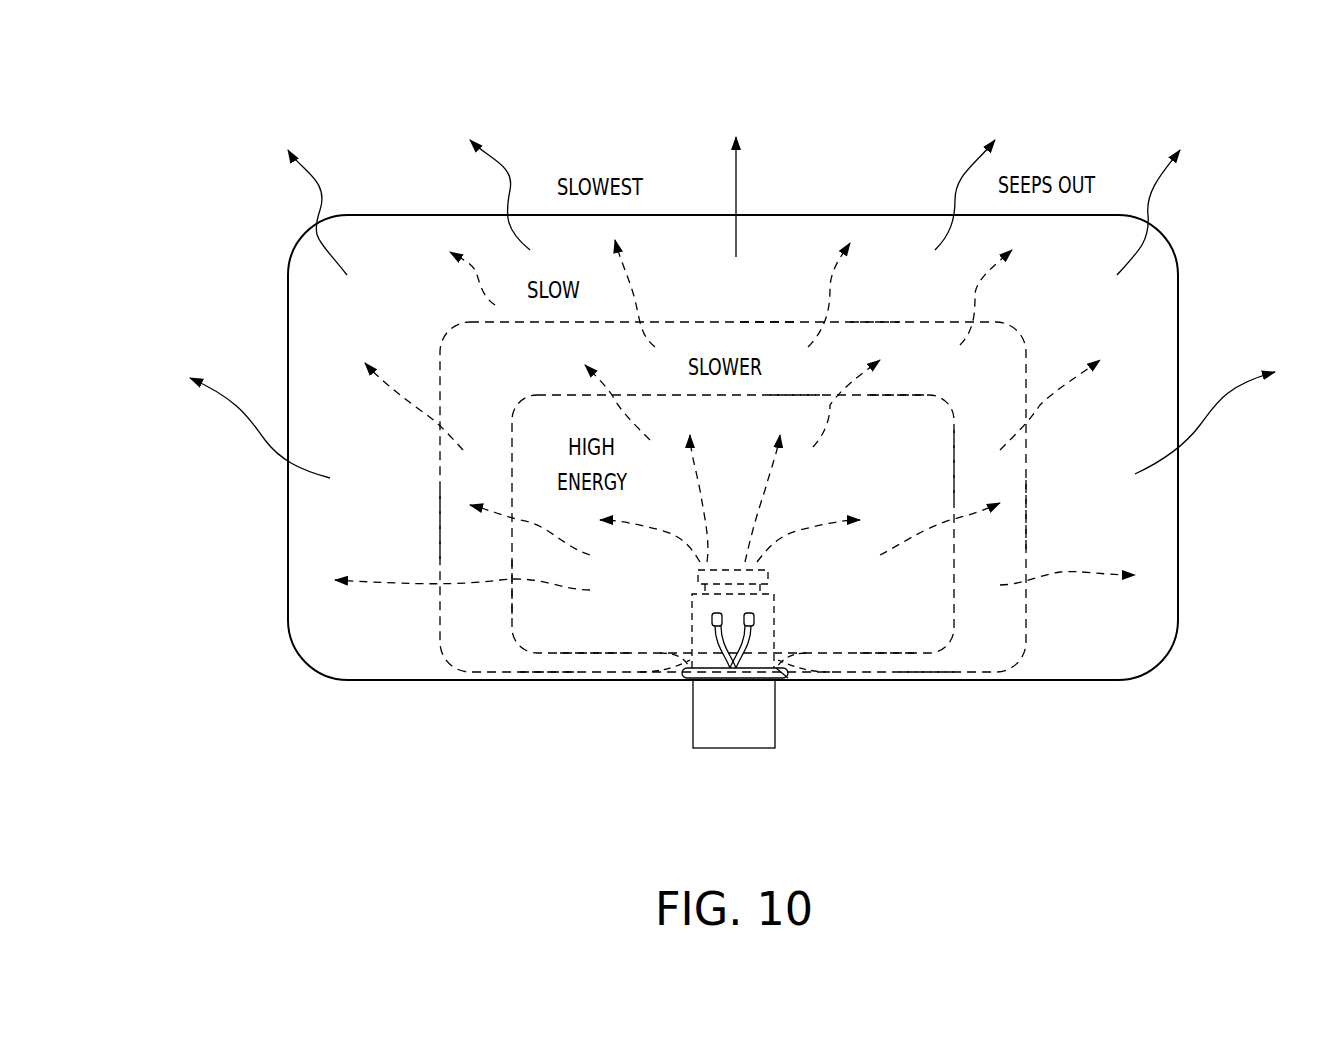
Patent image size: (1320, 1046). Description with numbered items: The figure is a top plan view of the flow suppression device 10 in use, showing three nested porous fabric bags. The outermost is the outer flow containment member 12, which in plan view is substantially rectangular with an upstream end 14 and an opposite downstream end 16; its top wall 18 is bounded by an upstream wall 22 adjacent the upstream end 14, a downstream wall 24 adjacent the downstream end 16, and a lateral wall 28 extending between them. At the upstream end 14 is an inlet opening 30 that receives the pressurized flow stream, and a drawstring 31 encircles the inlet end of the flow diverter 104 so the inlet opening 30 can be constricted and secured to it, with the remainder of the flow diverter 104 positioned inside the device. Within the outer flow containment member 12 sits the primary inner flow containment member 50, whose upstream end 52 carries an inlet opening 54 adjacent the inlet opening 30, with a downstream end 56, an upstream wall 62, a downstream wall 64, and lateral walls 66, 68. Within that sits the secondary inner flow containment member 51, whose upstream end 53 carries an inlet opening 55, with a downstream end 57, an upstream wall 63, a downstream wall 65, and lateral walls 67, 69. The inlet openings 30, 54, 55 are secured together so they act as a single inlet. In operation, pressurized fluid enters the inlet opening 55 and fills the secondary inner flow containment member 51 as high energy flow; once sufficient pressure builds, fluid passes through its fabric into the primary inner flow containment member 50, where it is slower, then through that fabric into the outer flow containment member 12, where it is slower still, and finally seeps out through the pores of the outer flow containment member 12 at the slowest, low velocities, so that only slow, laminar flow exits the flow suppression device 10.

The flow suppression device 10 is at (252, 208).
The outer flow containment member 12 is at (393, 215).
The upstream end 14 is at (418, 682).
The downstream end 16 is at (863, 215).
The top wall 18 is at (1130, 320).
The upstream wall 22 is at (1178, 490).
The downstream wall 24 is at (785, 215).
The lateral wall 28 is at (288, 503).
The inlet opening 30 is at (700, 685).
The drawstring 31 is at (717, 640).
The primary inner flow containment member 50 is at (442, 348).
The secondary inner flow containment member 51 is at (512, 398).
The upstream end 52 is at (932, 673).
The upstream end 53 is at (888, 654).
The inlet opening 54 is at (790, 678).
The inlet opening 55 is at (780, 655).
The downstream end 56 is at (872, 322).
The downstream end 57 is at (893, 395).
The upstream wall 62 is at (548, 675).
The upstream wall 63 is at (595, 654).
The downstream wall 64 is at (765, 322).
The downstream wall 65 is at (790, 395).
The lateral wall 66 is at (1026, 515).
The lateral wall 67 is at (955, 462).
The lateral wall 68 is at (440, 520).
The lateral wall 69 is at (512, 578).
The flow diverter 104 is at (780, 752).